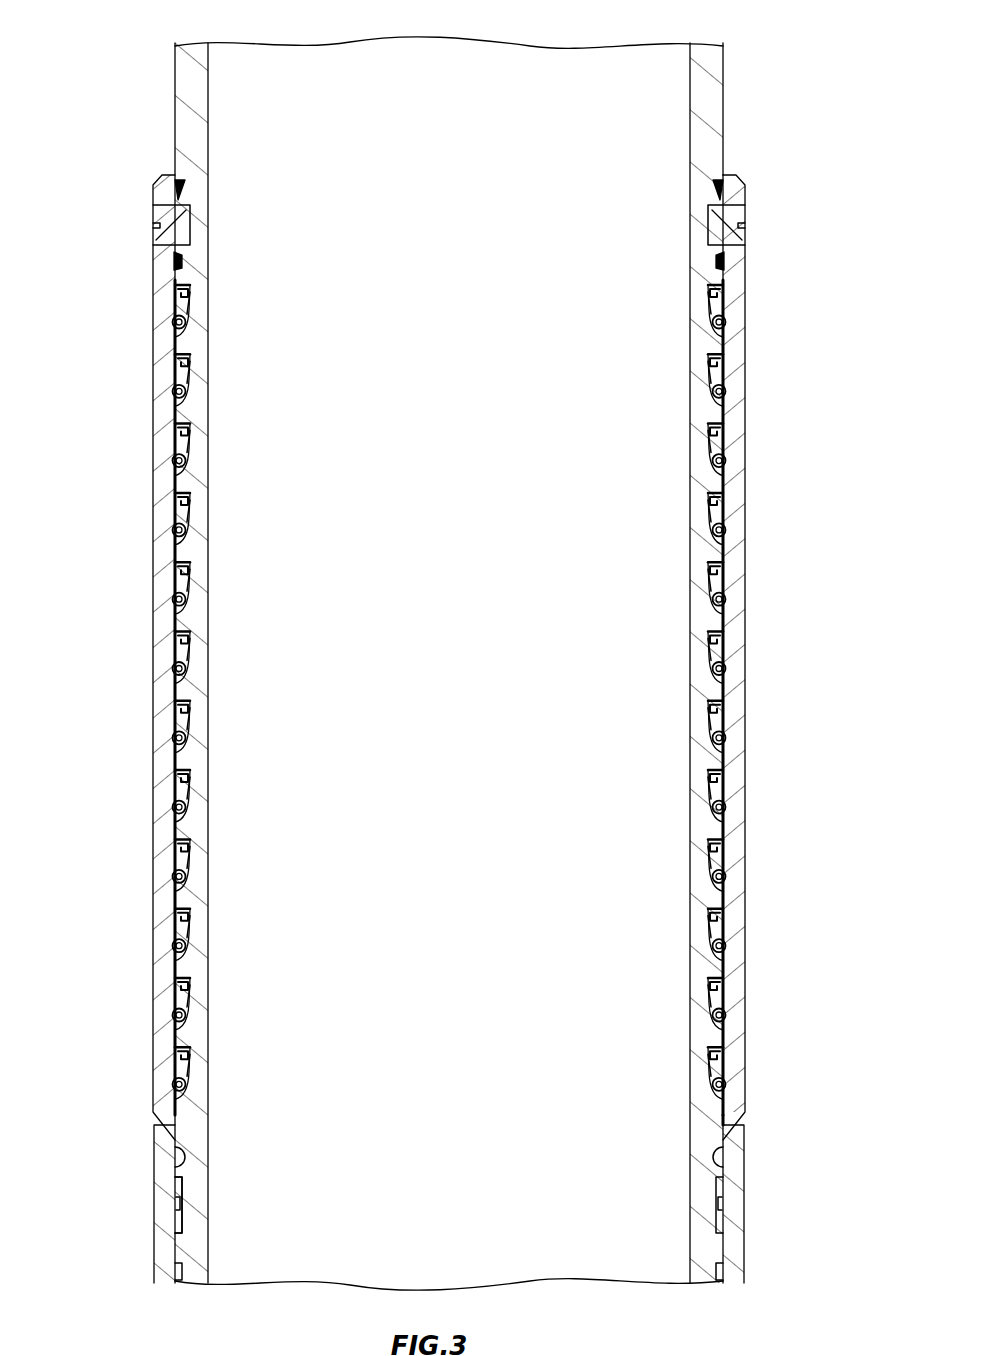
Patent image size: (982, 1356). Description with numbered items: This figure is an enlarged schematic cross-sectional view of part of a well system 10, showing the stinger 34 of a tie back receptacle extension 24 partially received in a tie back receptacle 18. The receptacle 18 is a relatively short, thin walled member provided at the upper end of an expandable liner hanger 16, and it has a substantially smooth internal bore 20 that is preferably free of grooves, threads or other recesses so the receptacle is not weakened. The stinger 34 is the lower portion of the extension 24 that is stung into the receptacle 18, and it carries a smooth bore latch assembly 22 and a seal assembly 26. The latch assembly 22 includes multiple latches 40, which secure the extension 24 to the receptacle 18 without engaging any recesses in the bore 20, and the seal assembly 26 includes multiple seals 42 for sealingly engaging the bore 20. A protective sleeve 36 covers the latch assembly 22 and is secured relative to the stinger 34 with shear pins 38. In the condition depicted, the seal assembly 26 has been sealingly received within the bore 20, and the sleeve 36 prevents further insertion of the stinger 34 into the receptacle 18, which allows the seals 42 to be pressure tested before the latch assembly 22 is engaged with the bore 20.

The well system 10 is at (804, 64).
The liner hanger 16 is at (153, 1233).
The tie back receptacle 18 is at (746, 1218).
The internal bore 20 is at (175, 1167).
The smooth bore latch assembly 22 is at (727, 647).
The tie back receptacle extension 24 is at (163, 100).
The seal assembly 26 is at (728, 1180).
The stinger 34 is at (727, 129).
The protective sleeve 36 is at (748, 512).
The shear pins 38 is at (153, 235).
The latches 40 is at (726, 322).
The seals 42 is at (177, 1182).